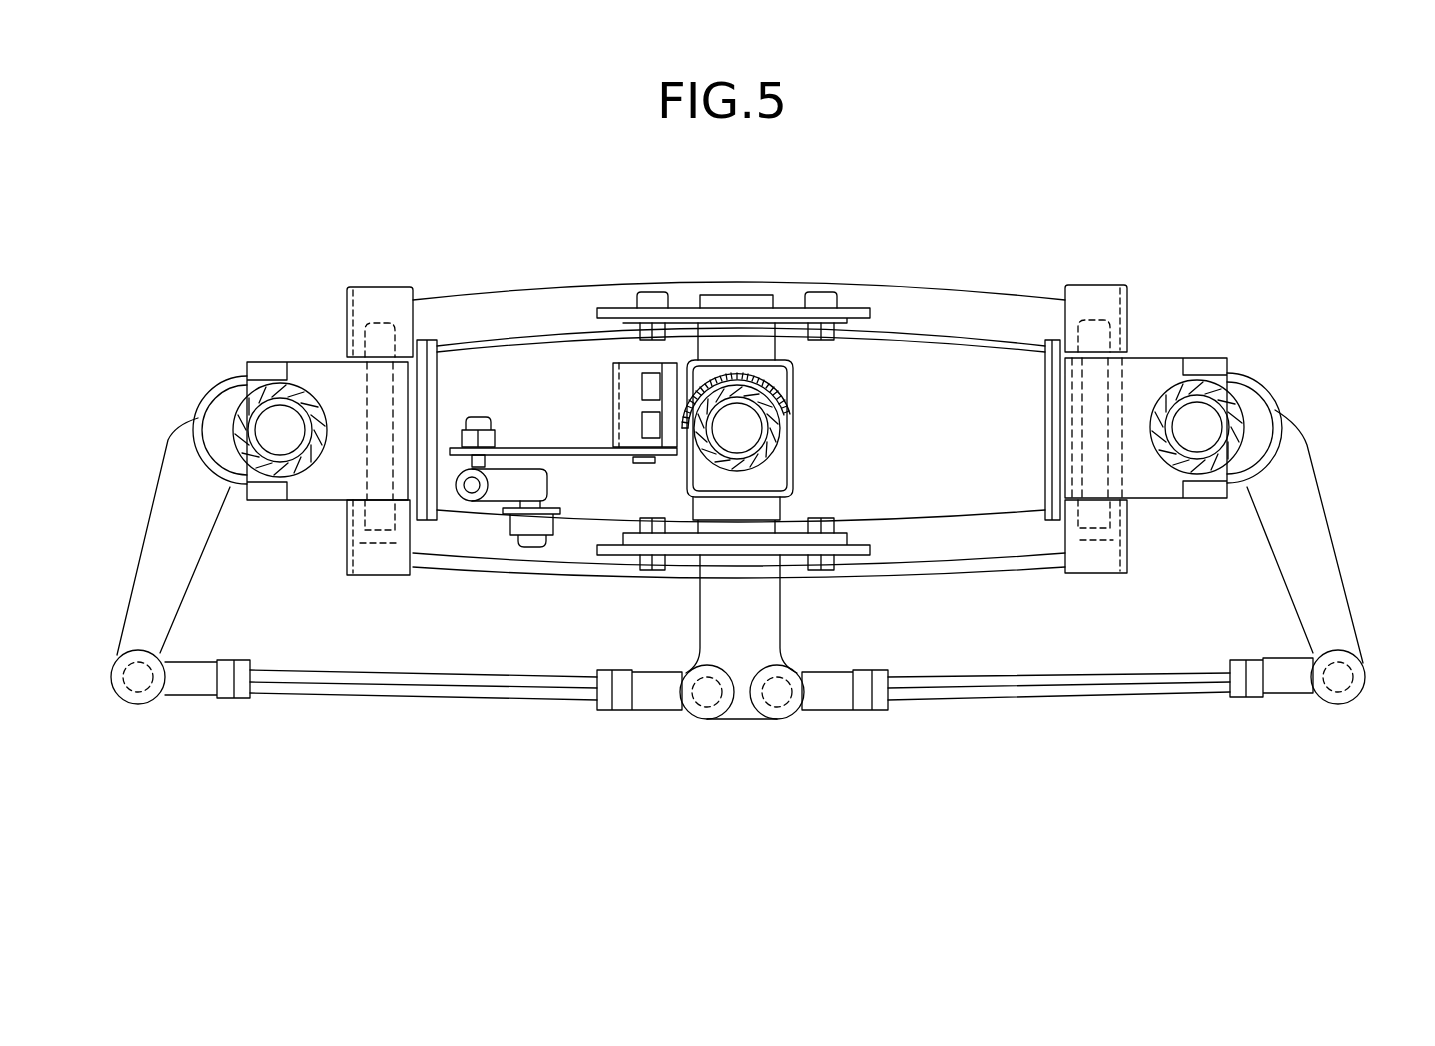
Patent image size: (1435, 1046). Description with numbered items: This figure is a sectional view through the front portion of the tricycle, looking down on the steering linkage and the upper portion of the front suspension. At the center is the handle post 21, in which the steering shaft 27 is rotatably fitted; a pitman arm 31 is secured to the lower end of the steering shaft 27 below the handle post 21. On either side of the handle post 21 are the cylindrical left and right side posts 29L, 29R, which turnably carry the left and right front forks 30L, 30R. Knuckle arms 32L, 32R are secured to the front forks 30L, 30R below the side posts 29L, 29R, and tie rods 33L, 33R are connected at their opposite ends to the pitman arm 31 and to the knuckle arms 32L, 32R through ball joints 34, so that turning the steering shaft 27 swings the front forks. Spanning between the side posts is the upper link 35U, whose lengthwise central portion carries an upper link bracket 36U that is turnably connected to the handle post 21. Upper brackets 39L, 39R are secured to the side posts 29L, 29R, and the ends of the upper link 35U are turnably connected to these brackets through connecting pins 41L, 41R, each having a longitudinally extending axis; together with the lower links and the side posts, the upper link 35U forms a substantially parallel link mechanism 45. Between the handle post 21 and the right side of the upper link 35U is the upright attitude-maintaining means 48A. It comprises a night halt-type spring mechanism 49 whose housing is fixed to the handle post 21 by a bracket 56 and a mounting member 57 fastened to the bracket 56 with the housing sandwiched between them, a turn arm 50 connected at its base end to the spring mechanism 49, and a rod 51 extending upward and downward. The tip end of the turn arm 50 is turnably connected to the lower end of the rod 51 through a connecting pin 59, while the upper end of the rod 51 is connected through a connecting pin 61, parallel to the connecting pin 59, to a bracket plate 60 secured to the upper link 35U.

The handle post 21 is at (793, 407).
The steering shaft 27 is at (790, 470).
The right side post 29R is at (222, 408).
The left side post 29L is at (1252, 418).
The right front fork 30R is at (288, 372).
The left front fork 30L is at (1189, 402).
The pitman arm 31 is at (762, 628).
The right knuckle arm 32R is at (192, 537).
The left knuckle arm 32L is at (1317, 547).
The tie rod 33R is at (515, 690).
The tie rod 33L is at (1040, 700).
The ball joint 34 is at (163, 685).
The upper link 35U is at (880, 303).
The upper link bracket 36U is at (690, 310).
The right upper bracket 39R is at (330, 373).
The left upper bracket 39L is at (1150, 490).
The right connecting pin 41R is at (365, 462).
The left connecting pin 41L is at (1113, 397).
The parallel link mechanism 45 is at (1023, 297).
The upright attitude-maintaining means 48A is at (563, 407).
The spring mechanism 49 is at (647, 470).
The turn arm 50 is at (528, 447).
The rod 51 is at (450, 500).
The bracket 56 is at (703, 370).
The mounting member 57 is at (630, 377).
The connecting pin 59 is at (470, 417).
The bracket plate 60 is at (550, 497).
The connecting pin 61 is at (527, 540).